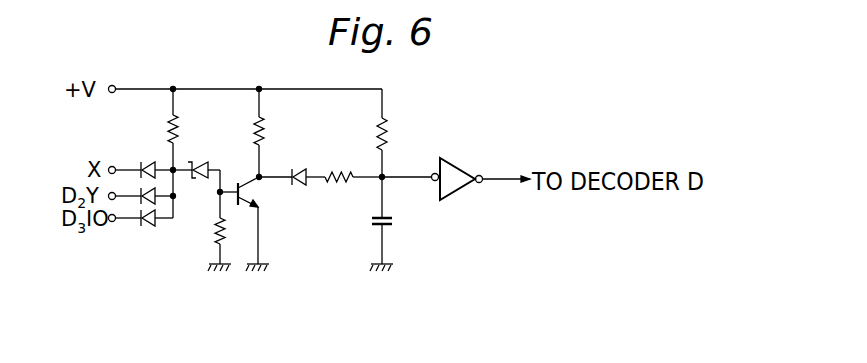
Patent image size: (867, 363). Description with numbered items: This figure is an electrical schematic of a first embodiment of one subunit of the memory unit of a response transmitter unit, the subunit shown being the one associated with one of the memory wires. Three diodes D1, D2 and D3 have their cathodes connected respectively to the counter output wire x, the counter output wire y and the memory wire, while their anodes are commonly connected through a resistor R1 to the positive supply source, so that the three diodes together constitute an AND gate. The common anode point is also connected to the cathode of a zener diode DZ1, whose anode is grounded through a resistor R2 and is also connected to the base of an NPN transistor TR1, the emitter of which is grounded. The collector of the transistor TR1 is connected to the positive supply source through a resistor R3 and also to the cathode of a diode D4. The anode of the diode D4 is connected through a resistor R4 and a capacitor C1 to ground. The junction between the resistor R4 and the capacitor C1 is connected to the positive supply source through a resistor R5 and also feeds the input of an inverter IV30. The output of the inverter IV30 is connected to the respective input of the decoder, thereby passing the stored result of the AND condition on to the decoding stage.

The resistor R1 is at (181, 122).
The resistor R2 is at (215, 240).
The resistor R3 is at (266, 122).
The resistor R4 is at (340, 186).
The resistor R5 is at (388, 135).
The diode D1 is at (141, 165).
The diode D2 is at (140, 190).
The diode D3 is at (140, 214).
The diode D4 is at (295, 170).
The zener diode DZ1 is at (201, 167).
The NPN transistor TR1 is at (259, 224).
The capacitor C1 is at (396, 224).
The inverter IV30 is at (457, 193).